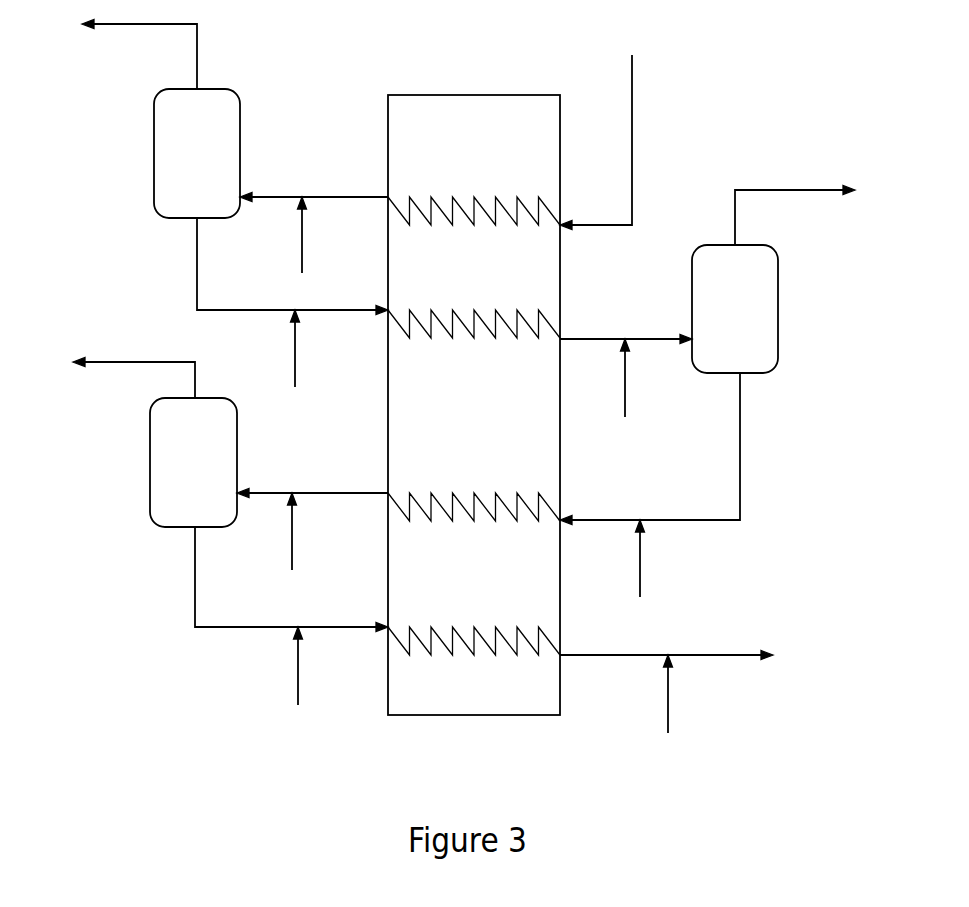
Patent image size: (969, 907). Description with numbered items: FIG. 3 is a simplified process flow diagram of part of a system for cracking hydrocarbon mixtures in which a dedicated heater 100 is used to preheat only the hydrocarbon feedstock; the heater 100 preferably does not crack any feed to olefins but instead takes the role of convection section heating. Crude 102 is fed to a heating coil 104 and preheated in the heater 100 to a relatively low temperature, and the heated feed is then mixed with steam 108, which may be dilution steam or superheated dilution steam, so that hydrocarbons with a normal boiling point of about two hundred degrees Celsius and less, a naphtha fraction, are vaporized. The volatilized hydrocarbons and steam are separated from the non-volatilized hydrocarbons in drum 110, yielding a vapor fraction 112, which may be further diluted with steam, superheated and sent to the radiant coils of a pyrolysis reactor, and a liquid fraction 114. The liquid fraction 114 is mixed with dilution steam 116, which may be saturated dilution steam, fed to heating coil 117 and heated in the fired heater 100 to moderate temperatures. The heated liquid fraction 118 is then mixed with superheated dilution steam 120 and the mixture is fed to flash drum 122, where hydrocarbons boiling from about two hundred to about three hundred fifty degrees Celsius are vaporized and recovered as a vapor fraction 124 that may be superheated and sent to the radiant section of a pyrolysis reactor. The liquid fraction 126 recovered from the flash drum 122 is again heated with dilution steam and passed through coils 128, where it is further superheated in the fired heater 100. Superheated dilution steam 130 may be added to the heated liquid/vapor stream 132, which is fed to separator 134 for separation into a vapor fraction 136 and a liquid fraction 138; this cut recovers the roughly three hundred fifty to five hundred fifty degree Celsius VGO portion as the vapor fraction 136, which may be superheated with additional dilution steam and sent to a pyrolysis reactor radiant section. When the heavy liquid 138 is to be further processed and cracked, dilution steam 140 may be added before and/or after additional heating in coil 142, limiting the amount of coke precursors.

The heater 100 is at (472, 95).
The crude 102 is at (632, 103).
The heating coil 104 is at (413, 197).
The steam 108 is at (302, 265).
The drum 110 is at (197, 153).
The vapor fraction 112 is at (197, 50).
The liquid fraction 114 is at (197, 275).
The dilution steam 116 is at (295, 365).
The heating coil 117 is at (440, 310).
The heated liquid fraction 118 is at (578, 339).
The superheated dilution steam 120 is at (625, 405).
The flash drum 122 is at (735, 309).
The vapor fraction 124 is at (765, 190).
The liquid fraction 126 is at (640, 583).
The coils 128 is at (455, 493).
The superheated dilution steam 130 is at (292, 552).
The heated liquid/vapor stream 132 is at (320, 493).
The separator 134 is at (193, 462).
The vapor fraction 136 is at (90, 362).
The liquid fraction 138 is at (195, 585).
The dilution steam 140 is at (298, 685).
The coil 142 is at (462, 627).